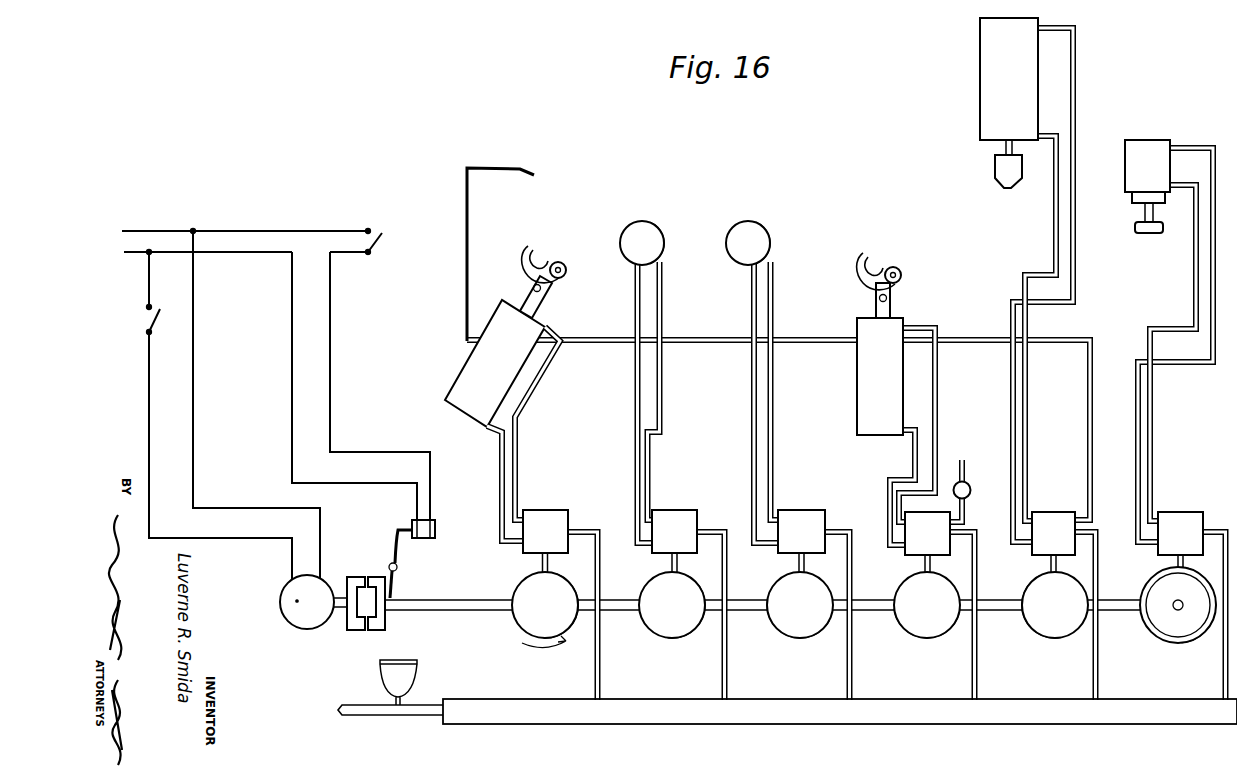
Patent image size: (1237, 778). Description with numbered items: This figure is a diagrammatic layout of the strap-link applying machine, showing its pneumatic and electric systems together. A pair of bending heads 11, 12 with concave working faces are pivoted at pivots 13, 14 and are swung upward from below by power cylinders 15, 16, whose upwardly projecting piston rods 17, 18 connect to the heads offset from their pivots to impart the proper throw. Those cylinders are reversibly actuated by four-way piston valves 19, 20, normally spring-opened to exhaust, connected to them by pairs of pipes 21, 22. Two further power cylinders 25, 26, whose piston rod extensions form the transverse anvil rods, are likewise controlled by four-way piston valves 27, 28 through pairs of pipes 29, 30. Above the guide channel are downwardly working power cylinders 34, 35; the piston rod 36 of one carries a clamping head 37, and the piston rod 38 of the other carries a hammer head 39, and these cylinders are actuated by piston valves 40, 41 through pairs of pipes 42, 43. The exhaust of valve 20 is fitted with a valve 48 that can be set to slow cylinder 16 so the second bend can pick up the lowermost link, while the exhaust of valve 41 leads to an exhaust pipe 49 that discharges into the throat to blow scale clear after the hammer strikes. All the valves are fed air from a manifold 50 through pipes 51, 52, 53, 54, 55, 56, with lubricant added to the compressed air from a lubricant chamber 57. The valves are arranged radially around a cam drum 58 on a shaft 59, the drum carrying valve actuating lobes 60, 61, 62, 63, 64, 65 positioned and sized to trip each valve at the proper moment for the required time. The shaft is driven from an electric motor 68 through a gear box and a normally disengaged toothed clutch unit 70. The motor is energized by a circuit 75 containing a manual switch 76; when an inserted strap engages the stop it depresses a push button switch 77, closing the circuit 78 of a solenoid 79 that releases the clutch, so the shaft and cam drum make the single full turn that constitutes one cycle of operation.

The bending head 11 is at (533, 249).
The bending head 12 is at (870, 256).
The pivot 13 is at (566, 275).
The pivot 14 is at (902, 275).
The power cylinder 15 is at (476, 373).
The power cylinder 16 is at (876, 378).
The piston rod 17 is at (523, 308).
The piston rod 18 is at (892, 305).
The four-way piston valve 19 is at (547, 524).
The four-way piston valve 20 is at (911, 546).
The pair of pipes 21 is at (518, 452).
The pair of pipes 22 is at (937, 442).
The power cylinder 25 is at (651, 226).
The power cylinder 26 is at (757, 226).
The four-way piston valve 27 is at (677, 524).
The four-way piston valve 28 is at (806, 527).
The pair of pipes 29 is at (650, 478).
The pair of pipes 30 is at (770, 456).
The power cylinder 34 is at (1143, 152).
The power cylinder 35 is at (990, 80).
The piston rod 36 is at (1146, 212).
The clamping head 37 is at (1151, 229).
The piston rod 38 is at (1004, 148).
The hammer head 39 is at (1002, 172).
The piston valve 40 is at (1178, 524).
The piston valve 41 is at (1049, 524).
The pair of pipes 42 is at (1152, 425).
The pair of pipes 43 is at (1025, 420).
The valve 48 is at (971, 487).
The exhaust pipe 49 is at (506, 170).
The manifold 50 is at (607, 727).
The pipe 51 is at (600, 670).
The pipe 52 is at (973, 672).
The pipe 53 is at (723, 670).
The pipe 54 is at (848, 673).
The pipe 55 is at (1226, 672).
The pipe 56 is at (1095, 672).
The lubricant chamber 57 is at (409, 675).
The cam drum 58 is at (510, 578).
The shaft 59 is at (431, 600).
The valve actuating lobe 60 is at (586, 584).
The valve actuating lobe 61 is at (912, 646).
The valve actuating lobe 62 is at (713, 584).
The valve actuating lobe 63 is at (778, 636).
The valve actuating lobe 64 is at (1160, 633).
The valve actuating lobe 65 is at (1022, 626).
The electric motor 68 is at (300, 628).
The clutch unit 70 is at (356, 590).
The circuit 75 is at (195, 430).
The manual switch 76 is at (155, 322).
The push button switch 77 is at (381, 240).
The circuit 78 is at (248, 252).
The solenoid 79 is at (430, 520).